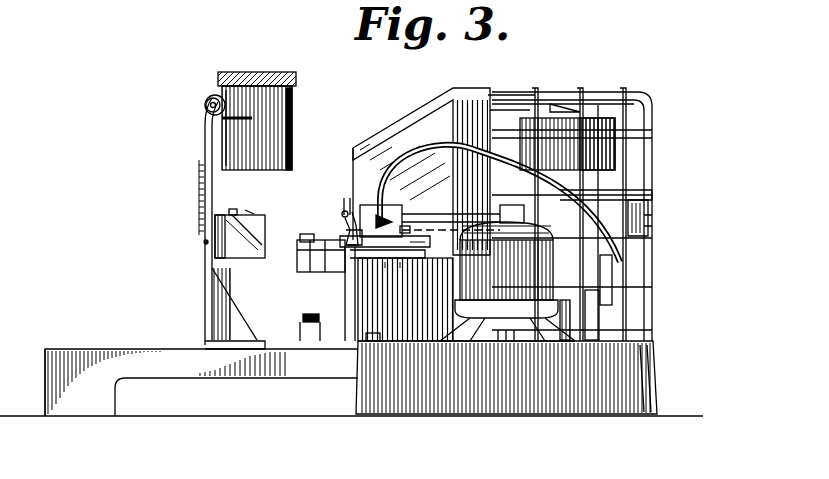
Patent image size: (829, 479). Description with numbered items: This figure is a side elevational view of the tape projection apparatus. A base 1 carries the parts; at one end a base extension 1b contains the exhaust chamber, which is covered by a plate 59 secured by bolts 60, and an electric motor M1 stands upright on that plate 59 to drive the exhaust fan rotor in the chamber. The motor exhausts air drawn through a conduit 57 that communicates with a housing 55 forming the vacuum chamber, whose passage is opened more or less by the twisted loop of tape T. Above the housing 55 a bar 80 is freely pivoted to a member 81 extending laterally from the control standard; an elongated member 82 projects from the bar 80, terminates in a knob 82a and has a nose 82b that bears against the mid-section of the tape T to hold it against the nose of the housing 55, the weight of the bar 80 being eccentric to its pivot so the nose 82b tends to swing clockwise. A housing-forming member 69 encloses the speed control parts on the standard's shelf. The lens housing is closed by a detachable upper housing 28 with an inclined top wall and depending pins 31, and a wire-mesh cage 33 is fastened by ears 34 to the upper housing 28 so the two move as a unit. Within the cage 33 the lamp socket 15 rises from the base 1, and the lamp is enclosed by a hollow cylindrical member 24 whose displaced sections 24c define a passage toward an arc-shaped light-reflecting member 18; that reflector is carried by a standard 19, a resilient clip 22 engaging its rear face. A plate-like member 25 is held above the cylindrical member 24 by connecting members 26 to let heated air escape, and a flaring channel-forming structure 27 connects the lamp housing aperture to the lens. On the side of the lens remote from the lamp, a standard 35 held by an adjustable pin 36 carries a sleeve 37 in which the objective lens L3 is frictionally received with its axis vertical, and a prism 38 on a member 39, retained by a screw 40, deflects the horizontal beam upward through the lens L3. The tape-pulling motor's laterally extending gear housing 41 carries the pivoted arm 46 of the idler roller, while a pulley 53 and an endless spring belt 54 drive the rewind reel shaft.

The base 1 is at (80, 356).
The base extension 1b is at (630, 367).
The lamp socket 15 is at (600, 306).
The light-reflecting member 18 is at (649, 215).
The standard 19 is at (613, 283).
The resilient clip 22 is at (650, 228).
The hollow cylindrical member 24 is at (630, 166).
The displaced sections 24c is at (654, 186).
The plate-like member 25 is at (600, 102).
The connecting members 26 is at (566, 105).
The channel-forming structure 27 is at (546, 186).
The upper housing 28 is at (404, 130).
The depending pin 31 is at (500, 224).
The cage 33 is at (653, 140).
The ears 34 is at (504, 97).
The standard 35 is at (207, 193).
The pin 36 is at (274, 322).
The sleeve 37 is at (297, 140).
The prism 38 is at (256, 218).
The member 39 is at (238, 252).
The screw 40 is at (204, 242).
The gear housing 41 is at (302, 264).
The arm 46 is at (300, 240).
The pulley 53 is at (330, 332).
The endless spring belt 54 is at (322, 316).
The housing 55 is at (404, 212).
The conduit 57 is at (448, 158).
The plate 59 is at (470, 338).
The bolts 60 is at (374, 337).
The housing-forming member 69 is at (370, 330).
The bar 80 is at (404, 260).
The member 81 is at (340, 252).
The elongated member 82 is at (346, 235).
The knob 82a is at (348, 205).
The nose 82b is at (343, 213).
The objective lens L3 is at (216, 94).
The electric motor M1 is at (485, 262).
The tape T is at (354, 210).